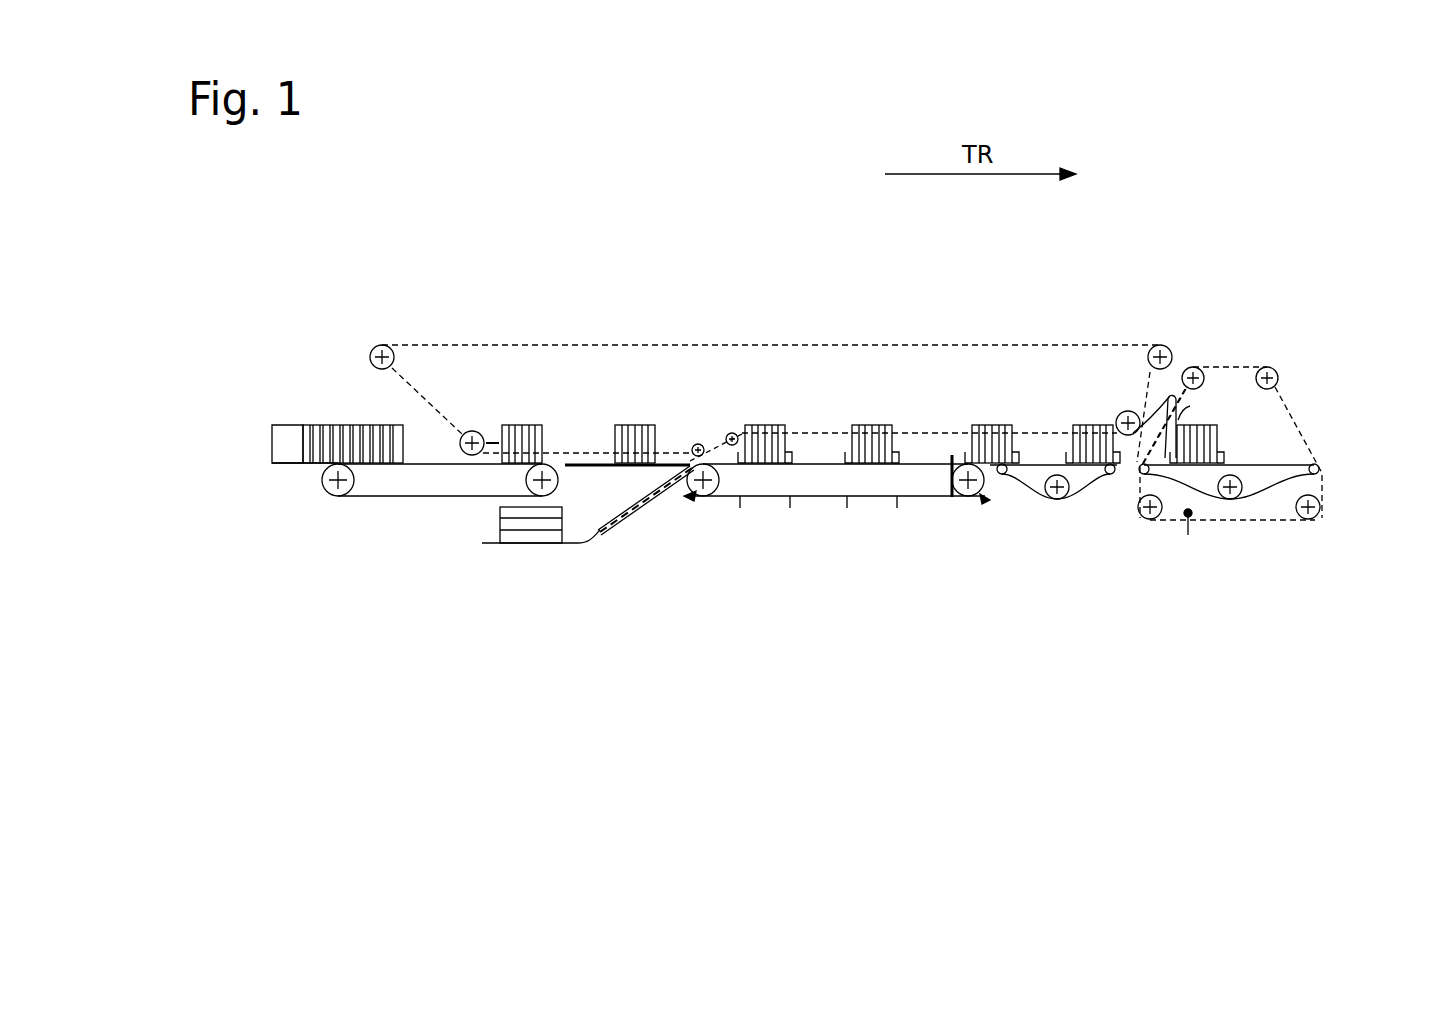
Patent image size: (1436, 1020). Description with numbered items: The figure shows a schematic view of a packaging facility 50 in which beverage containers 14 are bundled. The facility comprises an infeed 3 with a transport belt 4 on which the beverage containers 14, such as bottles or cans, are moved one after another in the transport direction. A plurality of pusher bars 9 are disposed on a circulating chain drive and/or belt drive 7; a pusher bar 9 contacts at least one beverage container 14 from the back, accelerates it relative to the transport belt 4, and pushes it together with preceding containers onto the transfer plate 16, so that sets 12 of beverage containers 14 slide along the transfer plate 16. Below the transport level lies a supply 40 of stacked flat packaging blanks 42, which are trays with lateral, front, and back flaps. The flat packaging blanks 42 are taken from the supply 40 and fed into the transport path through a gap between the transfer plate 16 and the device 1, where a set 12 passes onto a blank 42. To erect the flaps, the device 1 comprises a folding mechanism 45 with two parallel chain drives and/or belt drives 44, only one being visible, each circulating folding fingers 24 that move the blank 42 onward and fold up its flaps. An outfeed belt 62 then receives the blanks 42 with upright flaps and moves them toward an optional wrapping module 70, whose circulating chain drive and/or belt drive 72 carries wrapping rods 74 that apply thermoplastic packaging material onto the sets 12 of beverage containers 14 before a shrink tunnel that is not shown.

The device 1 is at (900, 397).
The infeed 3 is at (316, 350).
The transport belt 4 is at (428, 490).
The chain drive and/or belt drive 7 is at (688, 346).
The pusher bar 9 is at (611, 441).
The set of beverage containers 12 is at (549, 408).
The beverage container 14 is at (318, 456).
The transfer plate 16 is at (603, 468).
The folding finger 24 is at (837, 422).
The supply 40 is at (521, 566).
The flat packaging blank 42 is at (622, 520).
The chain drive and/or belt drive 44 is at (862, 500).
The folding mechanism 45 is at (915, 528).
The packaging facility 50 is at (510, 298).
The outfeed belt 62 is at (1088, 478).
The wrapping module 70 is at (1260, 425).
The chain drive and/or belt drive 72 is at (1305, 422).
The wrapping rod 74 is at (1188, 522).